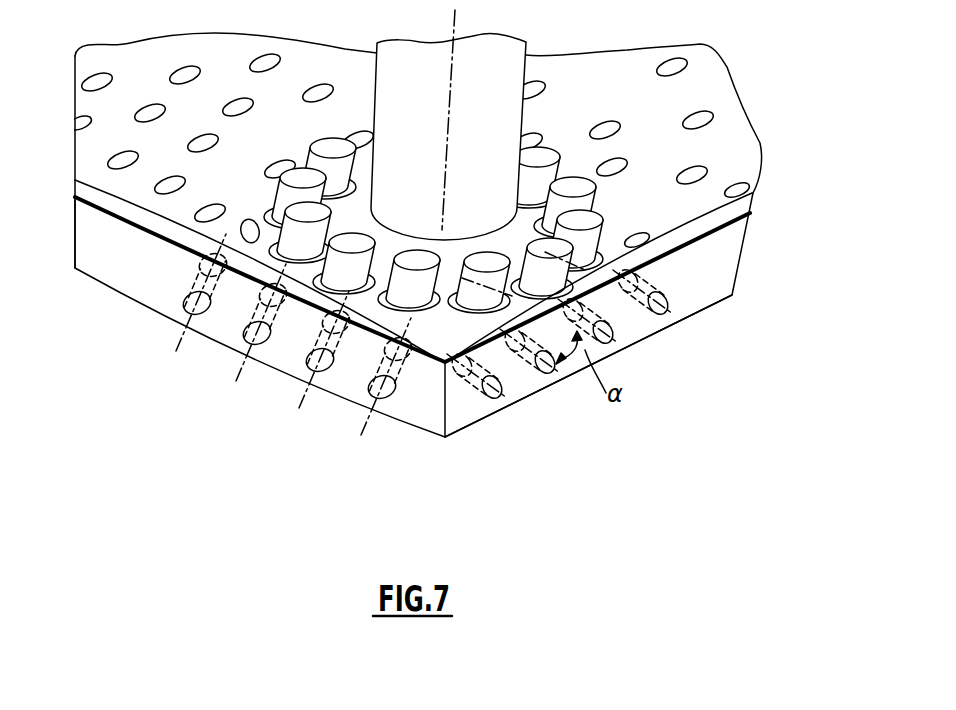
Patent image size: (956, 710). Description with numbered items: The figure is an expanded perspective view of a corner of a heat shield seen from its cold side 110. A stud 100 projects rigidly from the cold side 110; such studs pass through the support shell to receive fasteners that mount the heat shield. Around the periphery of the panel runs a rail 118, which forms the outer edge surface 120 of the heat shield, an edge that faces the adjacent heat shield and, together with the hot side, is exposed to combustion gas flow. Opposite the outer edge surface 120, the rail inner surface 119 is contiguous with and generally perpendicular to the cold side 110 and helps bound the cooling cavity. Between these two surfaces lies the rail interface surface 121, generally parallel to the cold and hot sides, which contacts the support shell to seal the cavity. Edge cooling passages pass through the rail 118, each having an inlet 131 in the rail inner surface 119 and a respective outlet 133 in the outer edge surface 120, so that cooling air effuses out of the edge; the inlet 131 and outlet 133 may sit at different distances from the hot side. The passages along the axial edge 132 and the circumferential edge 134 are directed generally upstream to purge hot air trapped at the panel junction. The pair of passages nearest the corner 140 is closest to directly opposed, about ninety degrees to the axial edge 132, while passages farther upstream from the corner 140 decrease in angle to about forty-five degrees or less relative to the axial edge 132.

The stud 100 is at (493, 80).
The cold side 110 is at (733, 128).
The rail 118 is at (118, 270).
The rail inner surface 119 is at (705, 212).
The outer edge surface 120 is at (152, 290).
The rail interface surface 121 is at (683, 236).
The inlet 131 is at (432, 358).
The axial edge 132 is at (397, 408).
The outlet 133 is at (505, 388).
The circumferential edge 134 is at (717, 257).
The corner 140 is at (444, 419).